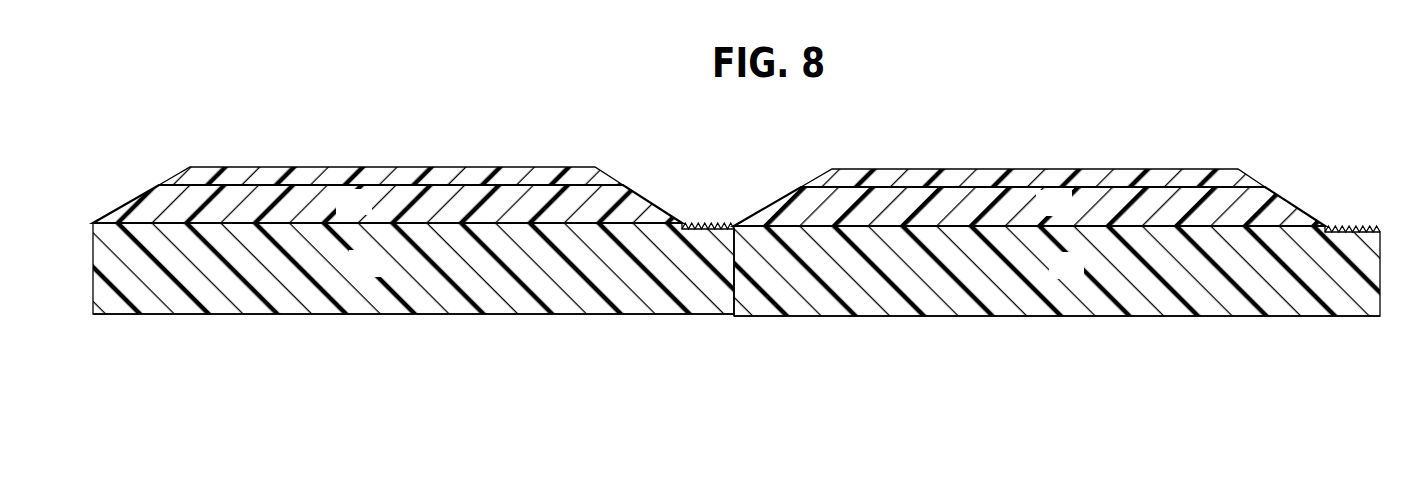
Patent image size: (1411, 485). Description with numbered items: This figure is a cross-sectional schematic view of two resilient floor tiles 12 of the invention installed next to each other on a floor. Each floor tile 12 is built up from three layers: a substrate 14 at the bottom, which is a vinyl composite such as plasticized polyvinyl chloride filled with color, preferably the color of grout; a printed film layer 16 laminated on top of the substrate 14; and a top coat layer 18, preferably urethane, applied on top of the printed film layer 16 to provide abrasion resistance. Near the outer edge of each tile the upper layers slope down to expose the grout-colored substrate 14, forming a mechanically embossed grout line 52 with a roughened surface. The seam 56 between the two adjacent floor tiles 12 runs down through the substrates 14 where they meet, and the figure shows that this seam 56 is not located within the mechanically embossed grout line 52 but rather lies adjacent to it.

The floor tile 12 is at (420, 316).
The substrate 14 is at (381, 274).
The printed film layer 16 is at (368, 212).
The top coat layer 18 is at (305, 172).
The mechanically embossed grout line 52 is at (701, 223).
The seam 56 is at (787, 317).